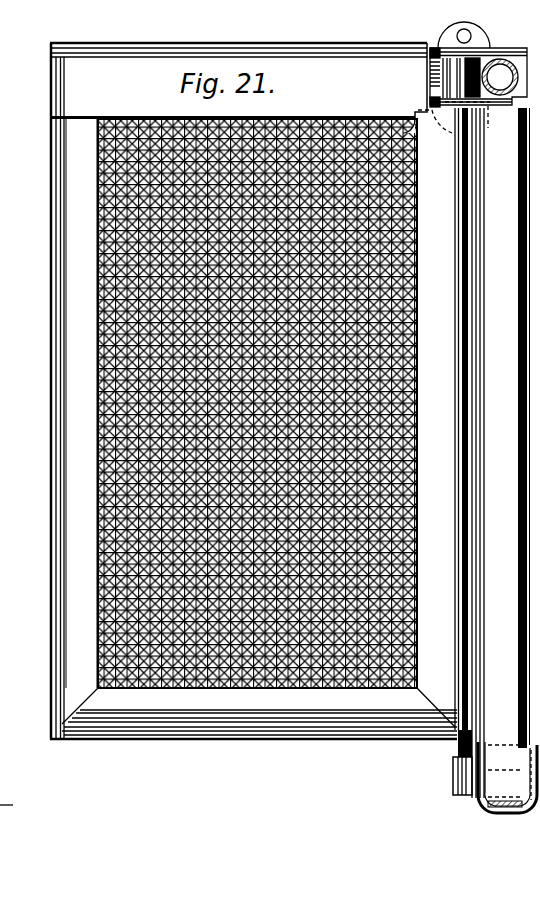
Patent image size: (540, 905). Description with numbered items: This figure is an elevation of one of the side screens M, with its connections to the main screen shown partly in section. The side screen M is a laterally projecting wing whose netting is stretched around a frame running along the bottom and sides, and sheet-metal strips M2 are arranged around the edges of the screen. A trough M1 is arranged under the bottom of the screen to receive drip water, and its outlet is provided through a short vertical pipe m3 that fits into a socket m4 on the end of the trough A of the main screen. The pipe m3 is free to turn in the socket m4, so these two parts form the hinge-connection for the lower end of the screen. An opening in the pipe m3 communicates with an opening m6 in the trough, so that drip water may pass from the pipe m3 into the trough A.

The side screen M is at (237, 391).
The trough M1 is at (456, 406).
The sheet-metal strips M2 is at (45, 463).
The short vertical pipe m3 is at (458, 748).
The socket m4 is at (468, 794).
The trough A is at (507, 791).
The opening m6 is at (17, 805).